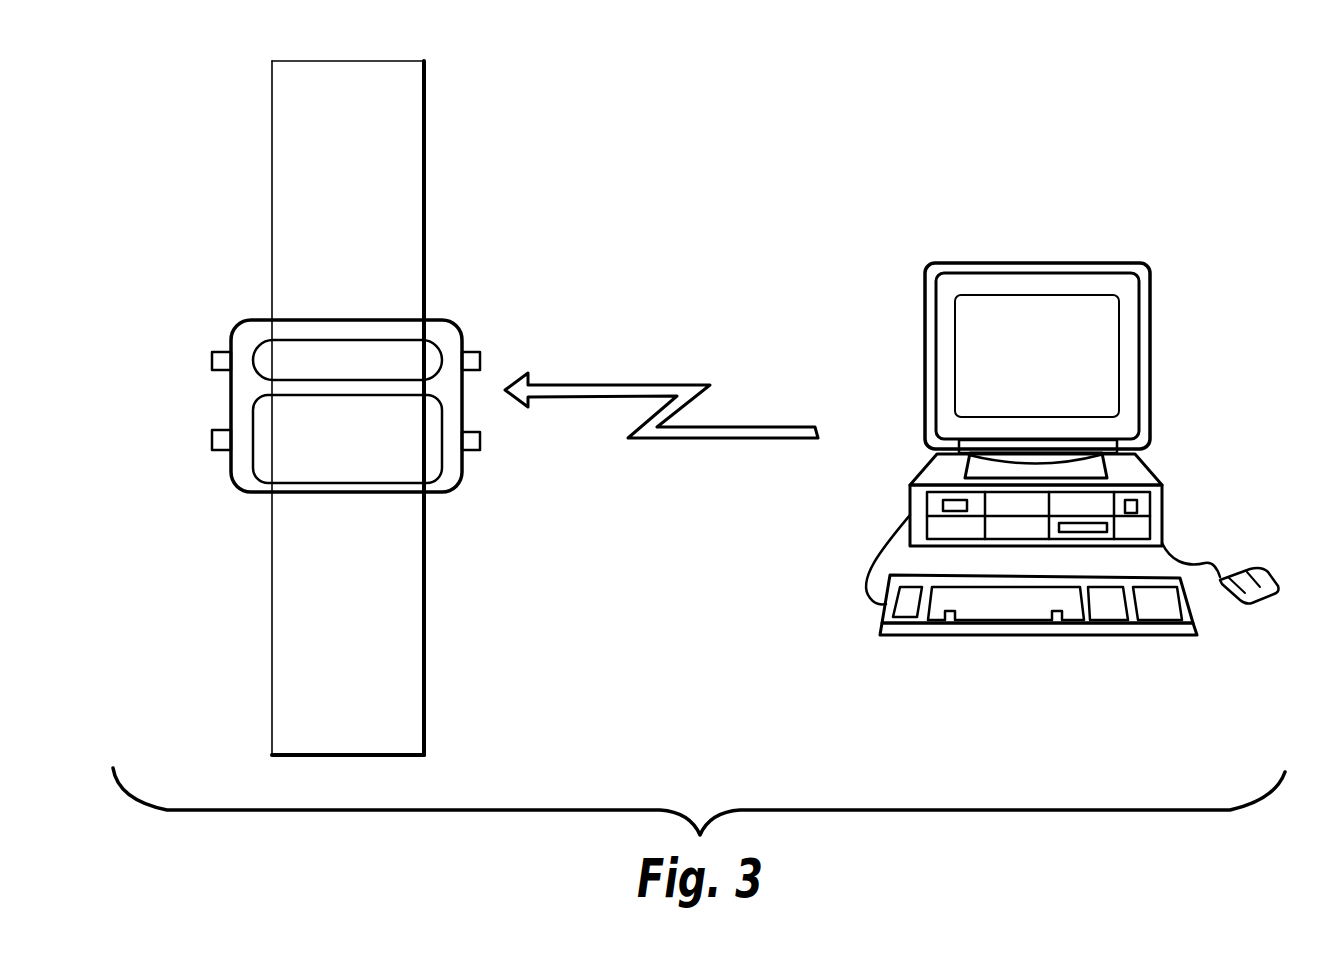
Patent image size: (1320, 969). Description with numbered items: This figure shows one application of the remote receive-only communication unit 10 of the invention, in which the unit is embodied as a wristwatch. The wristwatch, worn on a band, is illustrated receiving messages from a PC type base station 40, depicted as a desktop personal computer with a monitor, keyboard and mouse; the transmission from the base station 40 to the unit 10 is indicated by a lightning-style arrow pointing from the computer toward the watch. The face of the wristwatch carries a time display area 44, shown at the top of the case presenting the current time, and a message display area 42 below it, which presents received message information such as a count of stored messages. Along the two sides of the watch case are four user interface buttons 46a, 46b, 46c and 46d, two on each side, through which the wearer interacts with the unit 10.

The remote receive-only communication unit 10 is at (447, 310).
The PC type base station 40 is at (1152, 287).
The message display area 42 is at (254, 461).
The time display area 44 is at (267, 341).
The user interface button 46a is at (212, 359).
The user interface button 46b is at (212, 440).
The user interface button 46c is at (480, 360).
The user interface button 46d is at (480, 442).